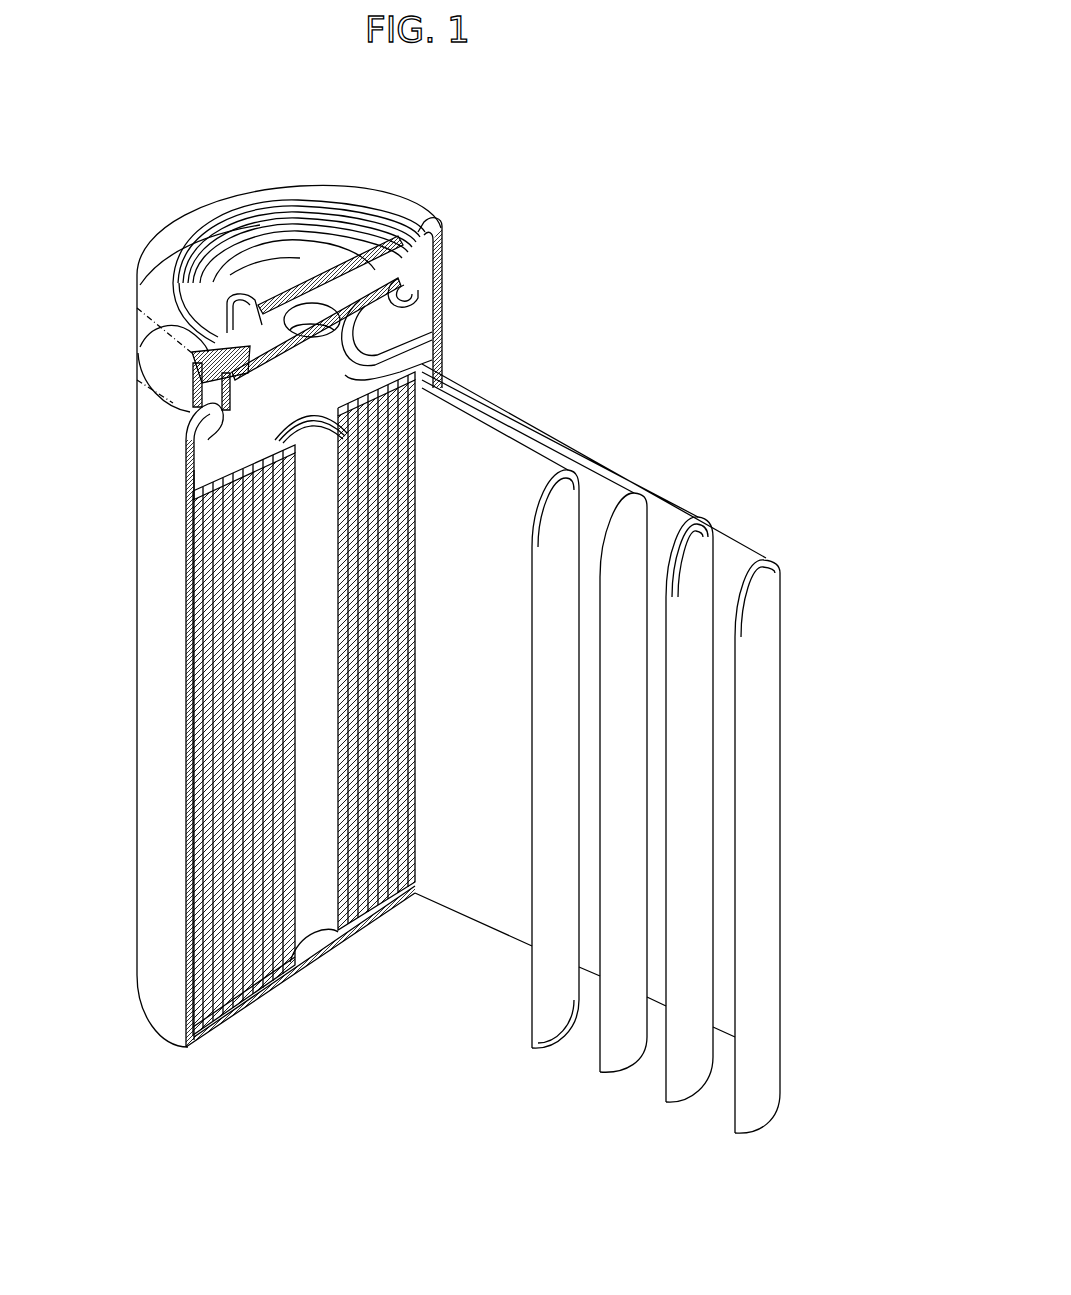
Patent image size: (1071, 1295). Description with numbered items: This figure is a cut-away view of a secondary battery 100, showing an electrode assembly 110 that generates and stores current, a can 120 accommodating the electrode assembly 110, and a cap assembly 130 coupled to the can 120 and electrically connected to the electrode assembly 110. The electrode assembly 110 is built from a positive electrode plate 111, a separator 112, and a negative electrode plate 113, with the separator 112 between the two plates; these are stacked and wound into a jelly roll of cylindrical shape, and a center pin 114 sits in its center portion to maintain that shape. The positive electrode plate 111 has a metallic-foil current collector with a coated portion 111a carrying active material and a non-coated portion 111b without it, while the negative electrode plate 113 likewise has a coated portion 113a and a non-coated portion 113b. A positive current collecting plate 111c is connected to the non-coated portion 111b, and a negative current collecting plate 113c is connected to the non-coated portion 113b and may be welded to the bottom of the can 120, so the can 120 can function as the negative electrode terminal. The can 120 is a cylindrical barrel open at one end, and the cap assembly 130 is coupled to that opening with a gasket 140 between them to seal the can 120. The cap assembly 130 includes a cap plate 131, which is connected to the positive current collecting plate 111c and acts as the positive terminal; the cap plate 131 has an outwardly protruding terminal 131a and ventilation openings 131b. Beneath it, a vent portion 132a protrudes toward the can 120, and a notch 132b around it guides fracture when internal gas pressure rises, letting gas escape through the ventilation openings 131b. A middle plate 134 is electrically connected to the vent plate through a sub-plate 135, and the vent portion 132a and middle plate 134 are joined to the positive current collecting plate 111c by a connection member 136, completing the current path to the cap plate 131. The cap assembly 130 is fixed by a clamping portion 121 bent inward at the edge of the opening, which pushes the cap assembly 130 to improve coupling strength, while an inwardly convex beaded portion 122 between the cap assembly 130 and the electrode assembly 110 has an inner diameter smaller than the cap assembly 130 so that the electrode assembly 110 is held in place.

The secondary battery 100 is at (549, 130).
The electrode assembly 110 is at (205, 925).
The positive electrode plate 111 is at (747, 430).
The coated portion 111a is at (706, 612).
The non-coated portion 111b is at (657, 505).
The positive current collecting plate 111c is at (208, 480).
The separator 112 is at (618, 1060).
The negative electrode plate 113 is at (568, 1124).
The coated portion 113a is at (533, 997).
The non-coated portion 113b is at (550, 1043).
The negative current collecting plate 113c is at (247, 988).
The center pin 114 is at (330, 918).
The can 120 is at (137, 697).
The clamping portion 121 is at (160, 320).
The beaded portion 122 is at (198, 413).
The cap assembly 130 is at (366, 228).
The cap plate 131 is at (397, 243).
The terminal 131a is at (283, 252).
The ventilation openings 131b is at (208, 325).
The vent portion 132a is at (312, 318).
The notch 132b is at (333, 293).
The middle plate 134 is at (410, 300).
The sub-plate 135 is at (345, 375).
The connection member 136 is at (432, 340).
The gasket 140 is at (437, 263).